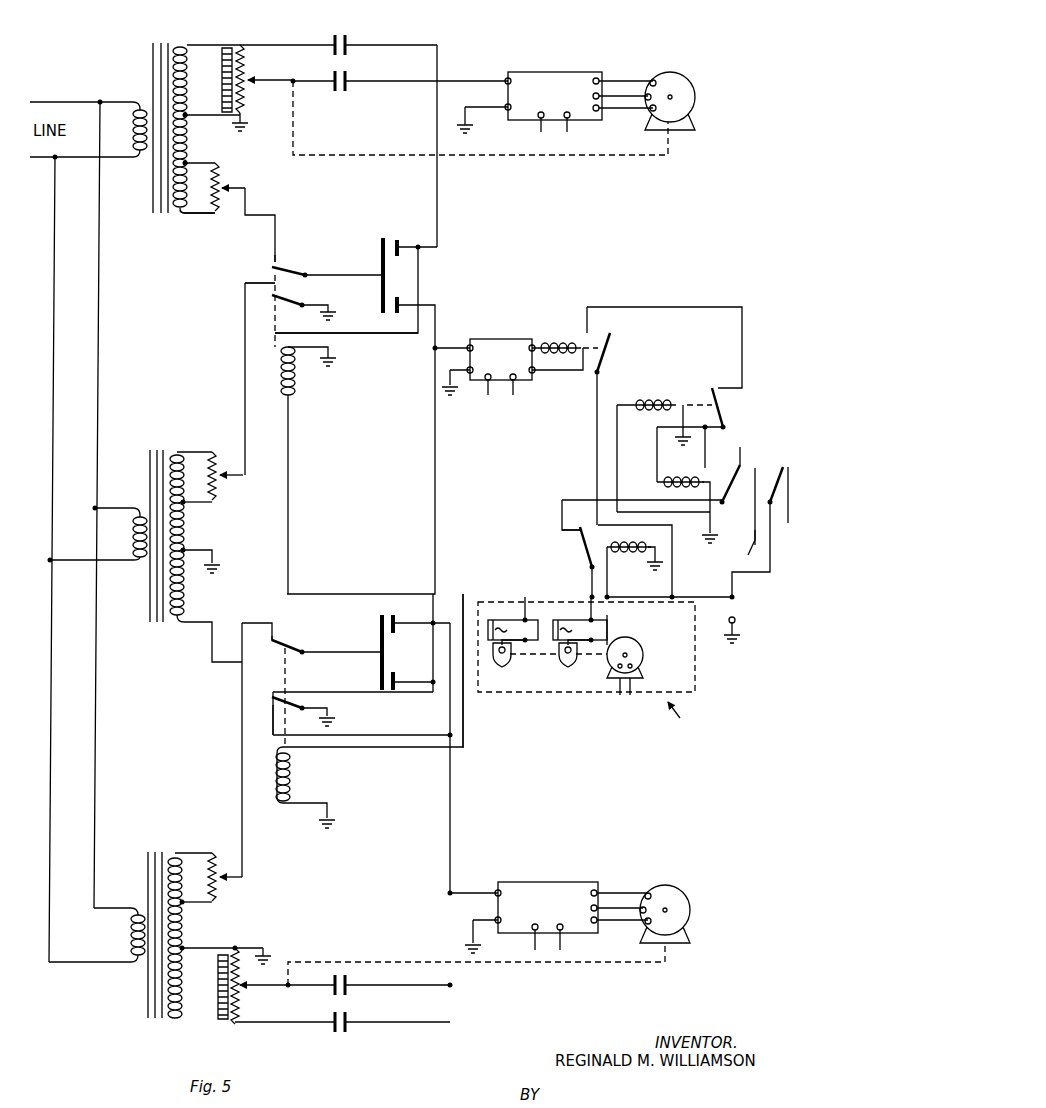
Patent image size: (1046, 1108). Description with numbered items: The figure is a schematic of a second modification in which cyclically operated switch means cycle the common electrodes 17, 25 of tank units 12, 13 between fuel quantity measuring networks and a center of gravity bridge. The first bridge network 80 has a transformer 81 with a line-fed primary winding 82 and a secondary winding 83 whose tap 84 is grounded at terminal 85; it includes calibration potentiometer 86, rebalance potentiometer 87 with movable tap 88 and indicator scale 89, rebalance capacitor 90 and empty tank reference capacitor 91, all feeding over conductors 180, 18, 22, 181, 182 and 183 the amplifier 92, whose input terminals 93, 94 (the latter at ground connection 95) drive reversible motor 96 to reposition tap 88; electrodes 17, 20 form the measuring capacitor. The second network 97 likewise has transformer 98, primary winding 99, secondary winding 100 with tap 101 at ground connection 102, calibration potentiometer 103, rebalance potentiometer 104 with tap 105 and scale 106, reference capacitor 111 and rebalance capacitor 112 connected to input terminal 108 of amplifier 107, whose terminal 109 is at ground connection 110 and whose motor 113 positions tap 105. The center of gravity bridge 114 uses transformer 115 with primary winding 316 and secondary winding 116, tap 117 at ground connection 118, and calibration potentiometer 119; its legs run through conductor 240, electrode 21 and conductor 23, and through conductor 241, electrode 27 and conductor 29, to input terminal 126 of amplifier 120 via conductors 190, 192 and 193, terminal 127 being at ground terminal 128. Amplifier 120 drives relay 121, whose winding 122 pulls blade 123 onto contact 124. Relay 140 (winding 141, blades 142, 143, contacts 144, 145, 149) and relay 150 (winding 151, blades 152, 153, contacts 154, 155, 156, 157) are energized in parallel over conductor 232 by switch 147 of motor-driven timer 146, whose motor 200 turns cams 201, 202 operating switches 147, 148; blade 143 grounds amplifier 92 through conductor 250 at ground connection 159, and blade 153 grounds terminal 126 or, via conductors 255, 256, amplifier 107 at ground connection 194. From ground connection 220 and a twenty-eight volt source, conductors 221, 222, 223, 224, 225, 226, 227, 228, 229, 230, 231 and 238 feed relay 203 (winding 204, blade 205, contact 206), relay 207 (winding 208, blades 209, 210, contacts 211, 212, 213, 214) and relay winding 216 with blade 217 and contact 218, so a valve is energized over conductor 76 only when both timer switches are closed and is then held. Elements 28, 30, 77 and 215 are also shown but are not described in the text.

The tank unit 12 is at (368, 242).
The tank unit 13 is at (340, 640).
The common electrode 17 is at (381, 262).
The conductor 18 is at (330, 275).
The electrode 20 is at (399, 257).
The third electrode 21 is at (400, 313).
The conductor 22 is at (404, 244).
The conductor 23 is at (438, 305).
The common electrode 25 is at (380, 640).
The third electrode 27 is at (396, 672).
The capacitor plate 28 is at (398, 620).
The conductor 29 is at (403, 682).
The conductor 30 is at (411, 625).
The conductor 76 is at (788, 525).
The conductor 77 is at (741, 544).
The first capacitance type balanceable bridge network 80 is at (453, 54).
The transformer 81 is at (140, 66).
The primary winding 82 is at (133, 132).
The secondary winding 83 is at (188, 132).
The first terminal or tap 84 is at (188, 114).
The ground terminal 85 is at (246, 128).
The calibration potentiometer 86 is at (227, 180).
The rebalance potentiometer 87 is at (256, 69).
The movable potentiometer tap 88 is at (245, 88).
The fuel quantity indicator scale 89 is at (222, 72).
The rebalance capacitor 90 is at (347, 88).
The empty tank reference capacitor 91 is at (342, 38).
The amplifier 92 is at (563, 70).
The first input terminal 93 is at (505, 79).
The second input terminal 94 is at (505, 105).
The ground connection 95 is at (470, 130).
The reversible motor 96 is at (688, 76).
The second fuel quantity measuring network 97 is at (177, 810).
The transformer 98 is at (140, 884).
The primary winding 99 is at (128, 933).
The secondary winding 100 is at (190, 927).
The first terminal or tap 101 is at (187, 950).
The ground connection 102 is at (268, 953).
The calibration potentiometer 103 is at (225, 886).
The rebalance potentiometer 104 is at (246, 1000).
The movable tap 105 is at (244, 983).
The fuel quantity indicator scale 106 is at (218, 982).
The amplifier 107 is at (556, 880).
The first input terminal 108 is at (496, 892).
The second input terminal 109 is at (496, 918).
The ground connection 110 is at (480, 947).
The empty tank reference capacitor 111 is at (350, 1012).
The rebalance capacitor 112 is at (350, 980).
The reversible motor 113 is at (680, 885).
The center of gravity capacitance bridge network 114 is at (200, 378).
The transformer 115 is at (140, 461).
The secondary winding 116 is at (186, 525).
The tap 117 is at (197, 549).
The ground connection 118 is at (220, 568).
The calibration potentiometer 119 is at (222, 485).
The amplifier 120 is at (487, 338).
The relay 121 is at (560, 335).
The winding 122 is at (557, 357).
The movable blade 123 is at (612, 350).
The contact 124 is at (597, 335).
The first input terminal 126 is at (462, 345).
The second input terminal 127 is at (465, 369).
The ground terminal 128 is at (455, 395).
The relay 140 is at (305, 398).
The winding 141 is at (296, 380).
The movable switch blade 142 is at (292, 270).
The movable switch blade 143 is at (295, 302).
The contact 144 is at (277, 260).
The contact 145 is at (265, 282).
The motor-driven timer 146 is at (548, 692).
The switch 147 is at (513, 631).
The switch 148 is at (580, 631).
The contact 149 is at (273, 308).
The relay 150 is at (340, 767).
The winding 151 is at (293, 778).
The movable switch blade 152 is at (292, 656).
The movable switch blade 153 is at (296, 704).
The contact 154 is at (285, 639).
The contact 155 is at (278, 692).
The contact 156 is at (270, 653).
The contact 157 is at (272, 712).
The ground connection 159 is at (333, 308).
The conductor 180 is at (275, 214).
The conductor 181 is at (438, 203).
The conductor 182 is at (397, 80).
The conductor 183 is at (433, 45).
The conductor 190 is at (450, 341).
The conductor 192 is at (436, 448).
The conductor 193 is at (362, 692).
The ground connection 194 is at (337, 713).
The motor 200 is at (645, 662).
The cam 201 is at (503, 668).
The cam 202 is at (571, 668).
The relay 203 is at (680, 398).
The relay winding 204 is at (633, 458).
The switch blade 205 is at (727, 403).
The contact 206 is at (727, 391).
The relay 207 is at (698, 475).
The winding 208 is at (668, 486).
The switch blade 209 is at (722, 505).
The switch blade 210 is at (759, 545).
The contact 211 is at (707, 467).
The contact 212 is at (707, 435).
The contact 213 is at (756, 466).
The contact 214 is at (786, 463).
The junction 215 is at (622, 588).
The relay winding 216 is at (614, 556).
The switch blade 217 is at (583, 555).
The contact 218 is at (576, 530).
The ground connection 220 is at (742, 636).
The conductor 221 is at (745, 598).
The conductor 222 is at (691, 588).
The conductor 223 is at (639, 586).
The conductor 224 is at (576, 610).
The conductor 225 is at (608, 620).
The conductor 226 is at (674, 552).
The conductor 227 is at (745, 328).
The conductor 228 is at (576, 586).
The conductor 229 is at (575, 500).
The conductor 230 is at (617, 462).
The conductor 231 is at (528, 596).
The conductor 232 is at (488, 596).
The conductor 238 is at (656, 440).
The conductor 240 is at (246, 405).
The conductor 241 is at (343, 653).
The conductor 250 is at (375, 337).
The conductor 255 is at (452, 805).
The conductor 256 is at (388, 735).
The primary winding 316 is at (133, 527).